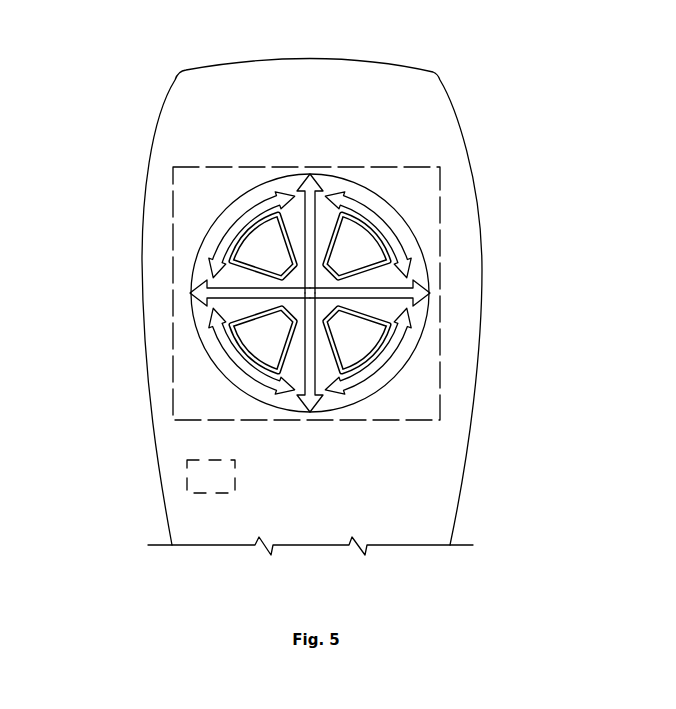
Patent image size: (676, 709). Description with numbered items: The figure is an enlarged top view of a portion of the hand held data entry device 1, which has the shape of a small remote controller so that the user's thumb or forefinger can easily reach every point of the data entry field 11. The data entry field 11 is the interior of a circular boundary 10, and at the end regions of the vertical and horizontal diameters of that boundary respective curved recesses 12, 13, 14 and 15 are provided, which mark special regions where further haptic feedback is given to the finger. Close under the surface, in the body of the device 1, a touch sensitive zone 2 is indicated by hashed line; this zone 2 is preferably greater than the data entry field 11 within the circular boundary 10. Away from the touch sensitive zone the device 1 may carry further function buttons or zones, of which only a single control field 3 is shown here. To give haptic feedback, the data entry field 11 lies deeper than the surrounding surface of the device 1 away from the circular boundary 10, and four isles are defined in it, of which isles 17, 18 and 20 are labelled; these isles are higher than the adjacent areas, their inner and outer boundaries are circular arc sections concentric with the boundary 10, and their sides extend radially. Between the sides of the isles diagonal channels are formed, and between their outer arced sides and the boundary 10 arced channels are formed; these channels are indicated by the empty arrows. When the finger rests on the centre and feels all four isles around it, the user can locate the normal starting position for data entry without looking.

The data entry device 1 is at (433, 105).
The touch sensitive zone 2 is at (419, 167).
The control field 3 is at (182, 483).
The circular boundary 10 is at (370, 199).
The data entry field 11 is at (257, 390).
The curved recess 12 is at (310, 175).
The curved recess 13 is at (430, 297).
The curved recess 14 is at (313, 413).
The curved recess 15 is at (188, 297).
The isle 17 is at (355, 250).
The isle 18 is at (355, 337).
The isle 20 is at (260, 250).